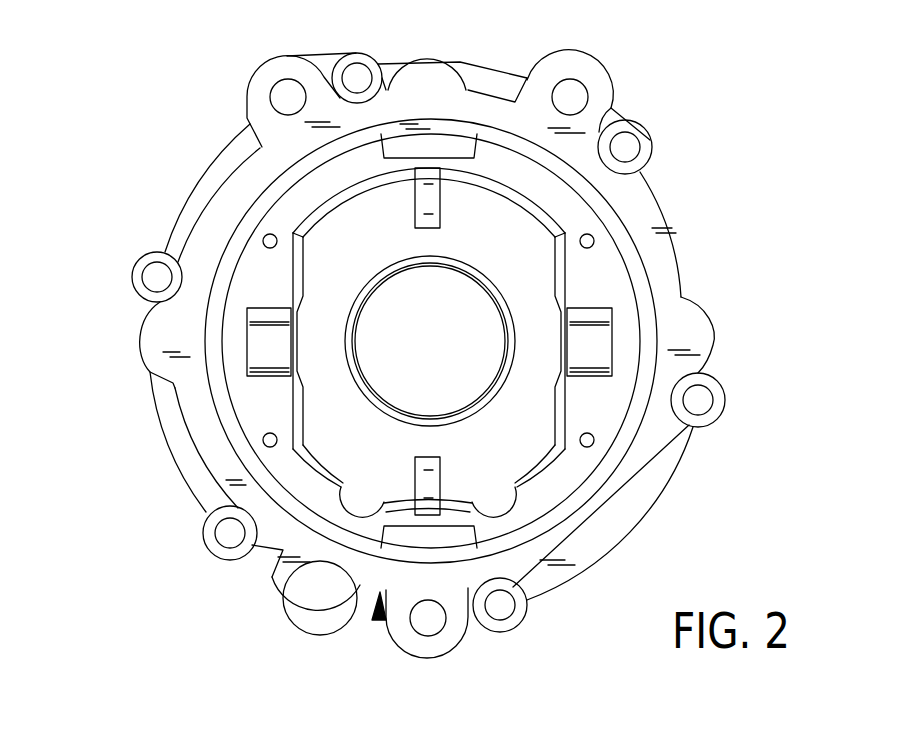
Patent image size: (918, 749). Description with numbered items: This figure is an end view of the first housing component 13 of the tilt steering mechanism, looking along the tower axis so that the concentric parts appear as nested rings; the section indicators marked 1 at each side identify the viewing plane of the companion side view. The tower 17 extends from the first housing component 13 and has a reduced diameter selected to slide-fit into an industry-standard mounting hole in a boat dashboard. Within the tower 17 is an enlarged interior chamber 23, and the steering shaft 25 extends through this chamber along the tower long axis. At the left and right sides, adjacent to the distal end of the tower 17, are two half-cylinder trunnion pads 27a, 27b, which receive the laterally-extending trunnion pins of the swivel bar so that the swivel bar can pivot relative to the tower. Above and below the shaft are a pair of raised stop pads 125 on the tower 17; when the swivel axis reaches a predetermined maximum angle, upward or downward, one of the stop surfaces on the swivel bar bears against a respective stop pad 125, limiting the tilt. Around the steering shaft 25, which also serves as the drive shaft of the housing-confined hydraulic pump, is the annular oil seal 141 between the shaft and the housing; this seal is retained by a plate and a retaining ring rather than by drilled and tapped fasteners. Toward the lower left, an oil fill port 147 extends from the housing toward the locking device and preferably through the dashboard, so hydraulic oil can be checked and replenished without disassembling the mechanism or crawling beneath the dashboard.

The section line 1- 1 is at (48, 332).
The first housing component 13 is at (650, 513).
The tower 17 is at (612, 223).
The enlarged interior chamber 23 is at (610, 283).
The steering shaft 25 is at (447, 320).
The half-cylinder trunnion pad 27a is at (260, 358).
The half-cylinder trunnion pad 27b is at (597, 348).
The raised stop pad 125 is at (415, 218).
The annular oil seal 141 is at (358, 361).
The oil fill port 147 is at (313, 607).